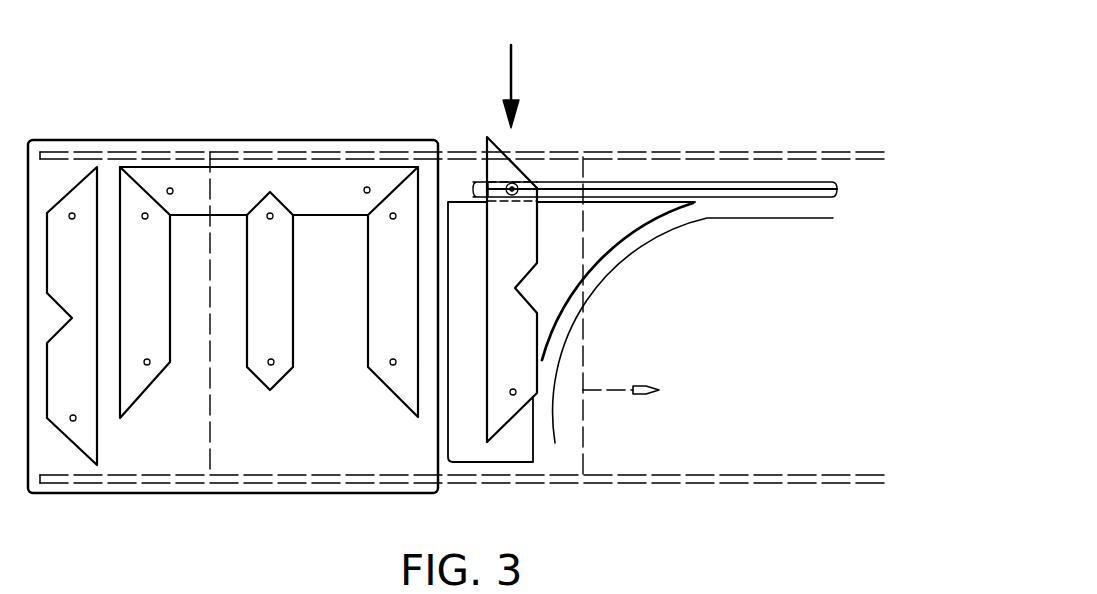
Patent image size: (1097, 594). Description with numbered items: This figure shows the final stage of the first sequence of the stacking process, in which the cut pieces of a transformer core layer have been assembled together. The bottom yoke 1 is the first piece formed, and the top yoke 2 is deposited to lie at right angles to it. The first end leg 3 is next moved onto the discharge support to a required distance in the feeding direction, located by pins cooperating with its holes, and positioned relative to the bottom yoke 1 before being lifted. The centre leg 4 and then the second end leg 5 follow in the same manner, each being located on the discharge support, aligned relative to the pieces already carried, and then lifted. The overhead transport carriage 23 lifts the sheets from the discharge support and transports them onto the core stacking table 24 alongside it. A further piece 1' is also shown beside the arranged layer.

The bottom yoke 1 is at (269, 191).
The top yoke 2 is at (72, 316).
The first end leg 3 is at (146, 292).
The centre leg 4 is at (270, 291).
The second end leg 5 is at (393, 292).
The displaced piece 1' is at (512, 289).
The overhead transport carriage 23 is at (583, 358).
The core stacking table 24 is at (163, 457).